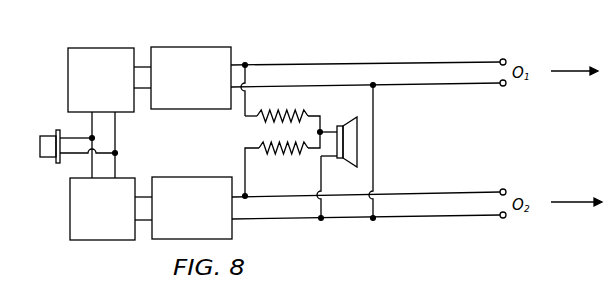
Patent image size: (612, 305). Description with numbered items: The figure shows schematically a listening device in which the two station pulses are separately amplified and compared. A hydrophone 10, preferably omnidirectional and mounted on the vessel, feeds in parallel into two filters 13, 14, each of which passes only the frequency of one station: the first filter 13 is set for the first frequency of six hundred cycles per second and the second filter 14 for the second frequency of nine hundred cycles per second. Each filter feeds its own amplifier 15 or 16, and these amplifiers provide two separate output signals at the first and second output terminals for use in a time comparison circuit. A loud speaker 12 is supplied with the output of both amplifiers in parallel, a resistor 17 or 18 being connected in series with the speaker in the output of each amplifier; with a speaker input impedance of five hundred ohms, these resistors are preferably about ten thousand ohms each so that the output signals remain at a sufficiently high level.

The hydrophone 10 is at (45, 161).
The loud speaker 12 is at (346, 161).
The filter 13 is at (100, 48).
The filter 14 is at (85, 240).
The amplifier 15 is at (195, 47).
The amplifier 16 is at (200, 177).
The resistor 17 is at (303, 109).
The resistor 18 is at (294, 157).